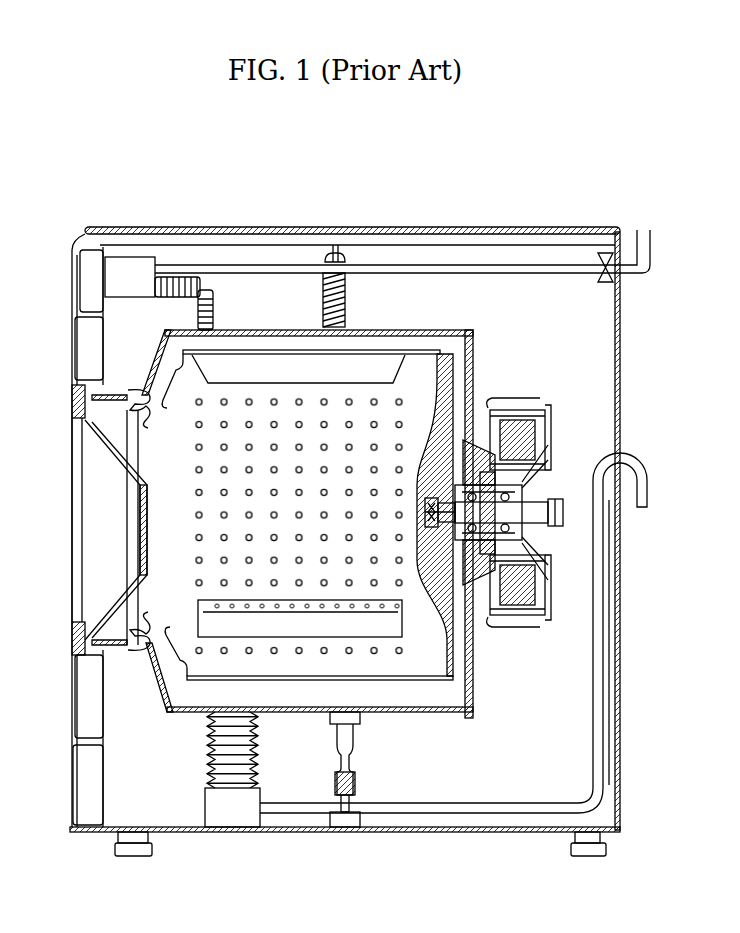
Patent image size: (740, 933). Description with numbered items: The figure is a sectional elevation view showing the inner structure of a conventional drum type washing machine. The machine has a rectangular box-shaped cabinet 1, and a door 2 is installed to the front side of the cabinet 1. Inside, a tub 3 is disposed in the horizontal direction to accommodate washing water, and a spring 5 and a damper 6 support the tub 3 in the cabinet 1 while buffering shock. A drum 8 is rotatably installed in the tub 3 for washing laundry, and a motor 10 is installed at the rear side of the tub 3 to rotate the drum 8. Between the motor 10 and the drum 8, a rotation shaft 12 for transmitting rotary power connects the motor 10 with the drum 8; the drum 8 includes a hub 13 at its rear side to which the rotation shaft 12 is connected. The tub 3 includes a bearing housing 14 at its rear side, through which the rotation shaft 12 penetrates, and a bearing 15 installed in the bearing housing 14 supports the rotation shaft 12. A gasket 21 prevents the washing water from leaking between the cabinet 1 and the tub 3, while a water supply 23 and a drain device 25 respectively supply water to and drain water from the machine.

The cabinet 1 is at (90, 223).
The door 2 is at (75, 530).
The tub 3 is at (418, 330).
The spring 5 is at (347, 290).
The damper 6 is at (363, 775).
The drum 8 is at (350, 351).
The motor 10 is at (545, 422).
The rotation shaft 12 is at (563, 507).
The hub 13 is at (535, 590).
The bearing housing 14 is at (440, 555).
The bearing 15 is at (520, 530).
The gasket 21 is at (127, 648).
The water supply 23 is at (205, 265).
The drain device 25 is at (232, 815).